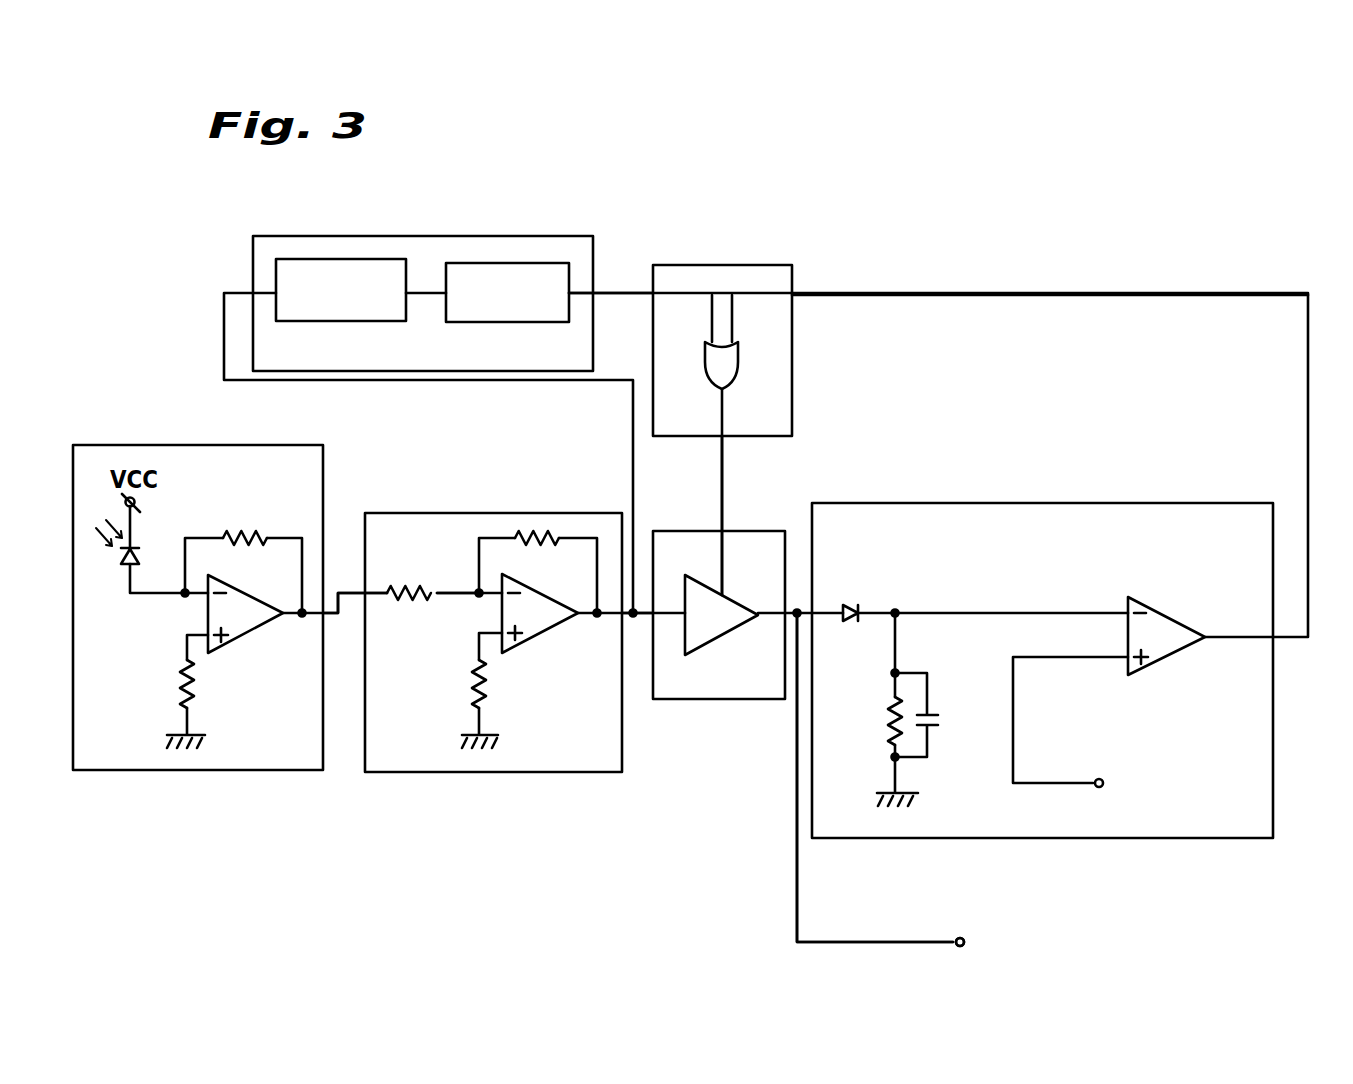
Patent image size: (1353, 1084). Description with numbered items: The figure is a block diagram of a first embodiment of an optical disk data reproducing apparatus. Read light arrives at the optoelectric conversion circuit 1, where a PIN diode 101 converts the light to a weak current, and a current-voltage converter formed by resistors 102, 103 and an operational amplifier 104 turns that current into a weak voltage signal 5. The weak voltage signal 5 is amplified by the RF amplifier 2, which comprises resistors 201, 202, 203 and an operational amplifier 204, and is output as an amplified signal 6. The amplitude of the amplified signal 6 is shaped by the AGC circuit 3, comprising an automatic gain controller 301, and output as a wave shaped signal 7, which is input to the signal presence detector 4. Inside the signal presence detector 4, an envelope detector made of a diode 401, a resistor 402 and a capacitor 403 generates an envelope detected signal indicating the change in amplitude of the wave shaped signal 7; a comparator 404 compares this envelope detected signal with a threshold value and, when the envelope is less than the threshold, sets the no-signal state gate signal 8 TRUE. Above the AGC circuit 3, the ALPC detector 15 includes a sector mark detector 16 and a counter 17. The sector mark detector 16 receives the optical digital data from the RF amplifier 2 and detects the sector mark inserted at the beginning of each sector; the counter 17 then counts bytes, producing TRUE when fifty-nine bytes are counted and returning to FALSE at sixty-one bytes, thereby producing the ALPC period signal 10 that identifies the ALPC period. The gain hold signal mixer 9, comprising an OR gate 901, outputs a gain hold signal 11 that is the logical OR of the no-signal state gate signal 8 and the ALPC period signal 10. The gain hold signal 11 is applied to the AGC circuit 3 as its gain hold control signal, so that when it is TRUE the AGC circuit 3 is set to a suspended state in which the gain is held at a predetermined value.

The optoelectric conversion circuit 1 is at (258, 580).
The RF amplifier 2 is at (442, 513).
The AGC (automatic gain control) circuit 3 is at (757, 531).
The signal presence detector 4 is at (880, 838).
The weak voltage signal 5 is at (352, 600).
The amplified signal 6 is at (636, 617).
The wave shaped signal 7 is at (1054, 785).
The no-signal state gate signal 8 is at (907, 295).
The gain hold signal mixer 9 is at (792, 265).
The ALPC period signal 10 is at (620, 293).
The gain hold signal 11 is at (723, 478).
The ALPC detector 15 is at (260, 236).
The sector mark detector 16 is at (328, 321).
The counter 17 is at (483, 322).
The PIN diode 101 is at (130, 564).
The resistor 102 is at (178, 687).
The resistor 103 is at (252, 532).
The operational amplifier 104 is at (240, 641).
The resistor 201 is at (417, 603).
The resistor 202 is at (475, 687).
The resistor 203 is at (515, 537).
The operational amplifier 204 is at (537, 636).
The automatic gain controller 301 is at (727, 633).
The diode 401 is at (850, 606).
The resistor 402 is at (888, 707).
The capacitor 403 is at (942, 704).
The comparator 404 is at (1173, 651).
The OR gate 901 is at (738, 368).